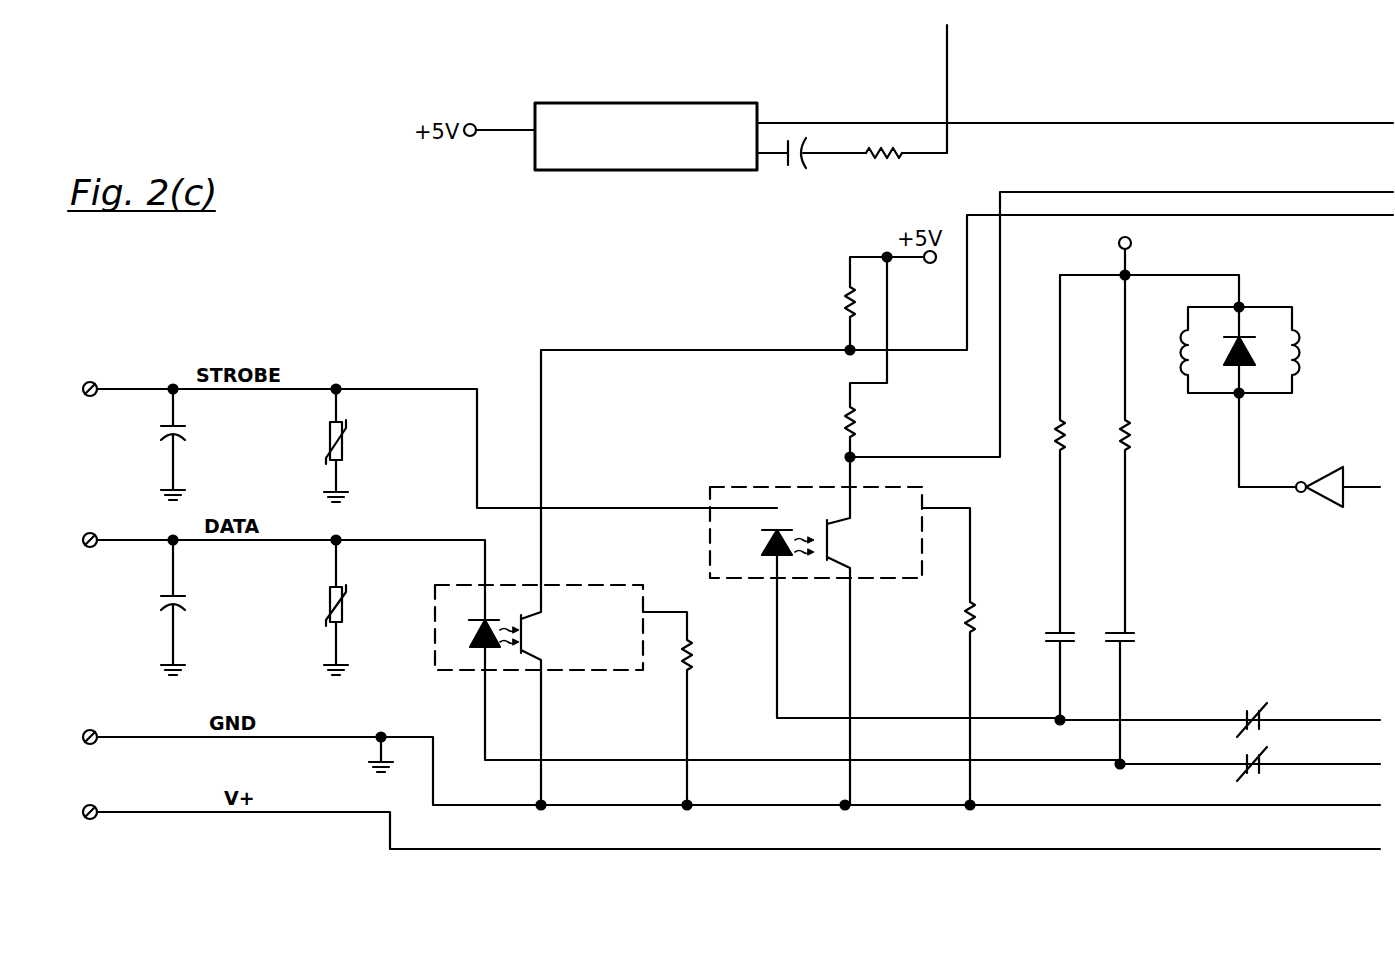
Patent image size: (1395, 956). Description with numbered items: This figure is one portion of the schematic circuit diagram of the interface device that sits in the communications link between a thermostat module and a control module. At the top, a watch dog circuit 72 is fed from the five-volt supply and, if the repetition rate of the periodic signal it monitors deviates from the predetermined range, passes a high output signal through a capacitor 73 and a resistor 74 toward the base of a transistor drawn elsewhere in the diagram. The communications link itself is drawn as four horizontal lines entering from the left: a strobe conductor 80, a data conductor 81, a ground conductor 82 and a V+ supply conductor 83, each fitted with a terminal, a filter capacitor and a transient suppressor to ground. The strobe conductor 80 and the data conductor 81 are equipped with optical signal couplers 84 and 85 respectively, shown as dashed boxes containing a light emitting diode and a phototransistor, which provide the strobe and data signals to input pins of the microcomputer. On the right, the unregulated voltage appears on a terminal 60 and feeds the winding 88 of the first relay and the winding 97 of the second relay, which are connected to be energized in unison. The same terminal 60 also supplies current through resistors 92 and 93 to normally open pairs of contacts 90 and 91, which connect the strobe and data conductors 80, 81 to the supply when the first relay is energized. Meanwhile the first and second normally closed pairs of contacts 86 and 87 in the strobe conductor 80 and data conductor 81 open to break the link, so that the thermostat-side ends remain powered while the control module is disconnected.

The watch dog circuit 72 is at (660, 171).
The capacitor 73 is at (790, 159).
The resistor 74 is at (880, 160).
The strobe conductor 80 is at (392, 389).
The data conductor 81 is at (378, 540).
The ground conductor 82 is at (322, 737).
The V+ supply conductor 83 is at (307, 812).
The optical signal coupler 84 is at (768, 486).
The optical signal coupler 85 is at (578, 586).
The terminal 60 is at (1118, 243).
The winding 88 is at (1185, 322).
The winding 97 is at (1296, 325).
The resistor 92 is at (1056, 440).
The resistor 93 is at (1118, 440).
The normally open pair of contacts 90 is at (1053, 642).
The normally open pair of contacts 91 is at (1113, 642).
The first normally closed pair of contacts 86 is at (1248, 716).
The second normally closed pair of contacts 87 is at (1248, 770).